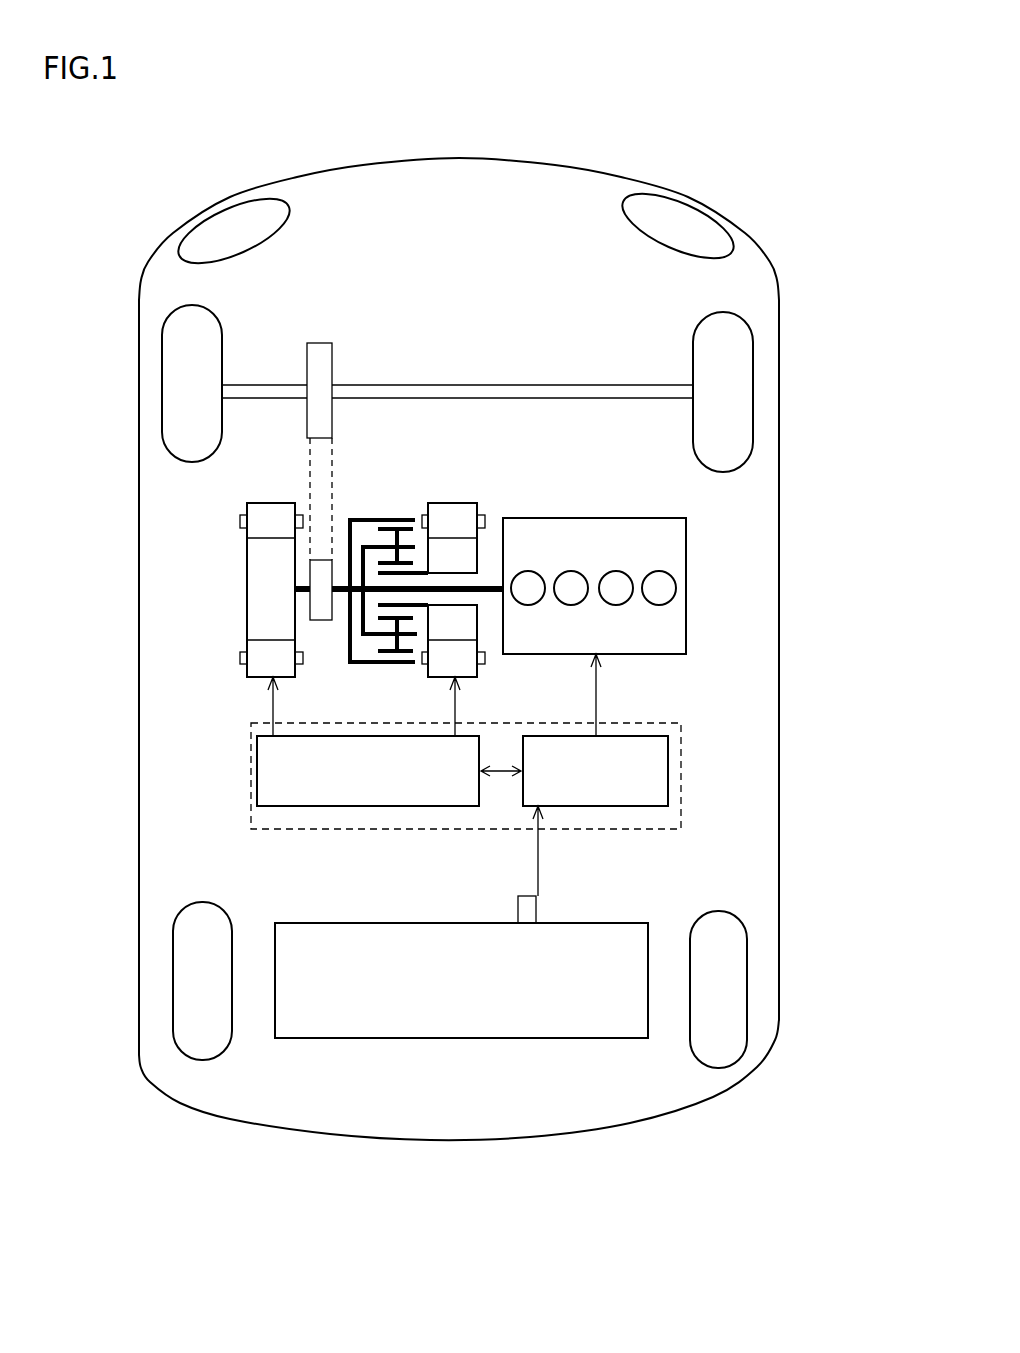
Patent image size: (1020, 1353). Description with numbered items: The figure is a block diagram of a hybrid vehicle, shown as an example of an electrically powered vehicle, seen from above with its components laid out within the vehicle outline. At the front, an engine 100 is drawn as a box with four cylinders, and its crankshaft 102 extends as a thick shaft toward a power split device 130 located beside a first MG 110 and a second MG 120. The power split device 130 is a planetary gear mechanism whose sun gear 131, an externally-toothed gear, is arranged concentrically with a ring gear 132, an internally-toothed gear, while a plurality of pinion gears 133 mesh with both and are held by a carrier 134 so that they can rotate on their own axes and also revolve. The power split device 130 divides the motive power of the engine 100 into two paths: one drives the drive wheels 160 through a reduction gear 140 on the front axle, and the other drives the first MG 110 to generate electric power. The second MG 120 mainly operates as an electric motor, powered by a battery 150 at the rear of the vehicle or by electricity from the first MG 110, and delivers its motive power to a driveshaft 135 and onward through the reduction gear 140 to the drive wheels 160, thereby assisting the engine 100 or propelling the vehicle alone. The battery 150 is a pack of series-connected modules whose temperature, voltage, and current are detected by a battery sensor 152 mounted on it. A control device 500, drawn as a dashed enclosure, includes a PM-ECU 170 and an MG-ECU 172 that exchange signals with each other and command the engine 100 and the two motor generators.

The engine 100 is at (560, 518).
The crankshaft 102 is at (488, 597).
The first MG 110 is at (452, 503).
The second MG 120 is at (247, 586).
The power split device 130 is at (388, 402).
The sun gear 131 is at (418, 568).
The ring gear 132 is at (363, 517).
The pinion gears 133 is at (403, 645).
The carrier 134 is at (370, 637).
The driveshaft 135 is at (343, 597).
The reduction gear 140 is at (328, 306).
The battery 150 is at (375, 1038).
The battery sensor 152 is at (518, 910).
The drive wheels 160 is at (160, 413).
The PM-ECU 170 is at (668, 771).
The MG-ECU 172 is at (257, 763).
The control device 500 is at (461, 775).